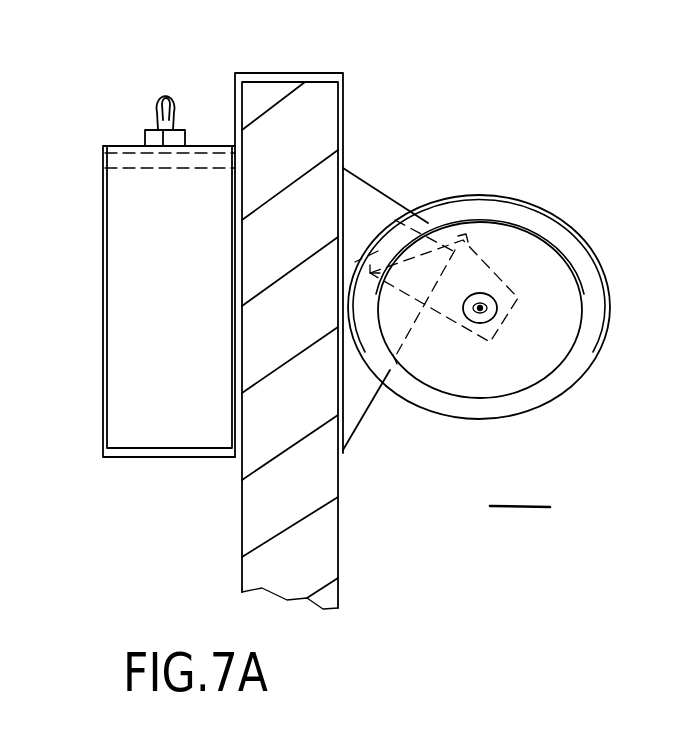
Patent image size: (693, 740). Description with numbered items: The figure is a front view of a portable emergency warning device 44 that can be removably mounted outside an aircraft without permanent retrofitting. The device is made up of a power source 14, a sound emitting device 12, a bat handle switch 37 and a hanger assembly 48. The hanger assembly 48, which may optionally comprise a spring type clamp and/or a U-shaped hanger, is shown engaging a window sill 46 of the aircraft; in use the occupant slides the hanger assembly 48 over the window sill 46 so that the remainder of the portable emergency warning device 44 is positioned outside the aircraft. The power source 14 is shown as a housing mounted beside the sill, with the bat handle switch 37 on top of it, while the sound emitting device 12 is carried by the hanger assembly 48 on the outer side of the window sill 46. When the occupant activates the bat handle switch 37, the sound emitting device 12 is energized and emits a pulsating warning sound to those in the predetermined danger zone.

The sound emitting device 12 is at (563, 222).
The power source 14 is at (193, 415).
The bat handle switch 37 is at (179, 108).
The portable emergency warning device 44 is at (520, 485).
The window sill 46 is at (338, 557).
The hanger assembly 48 is at (395, 193).